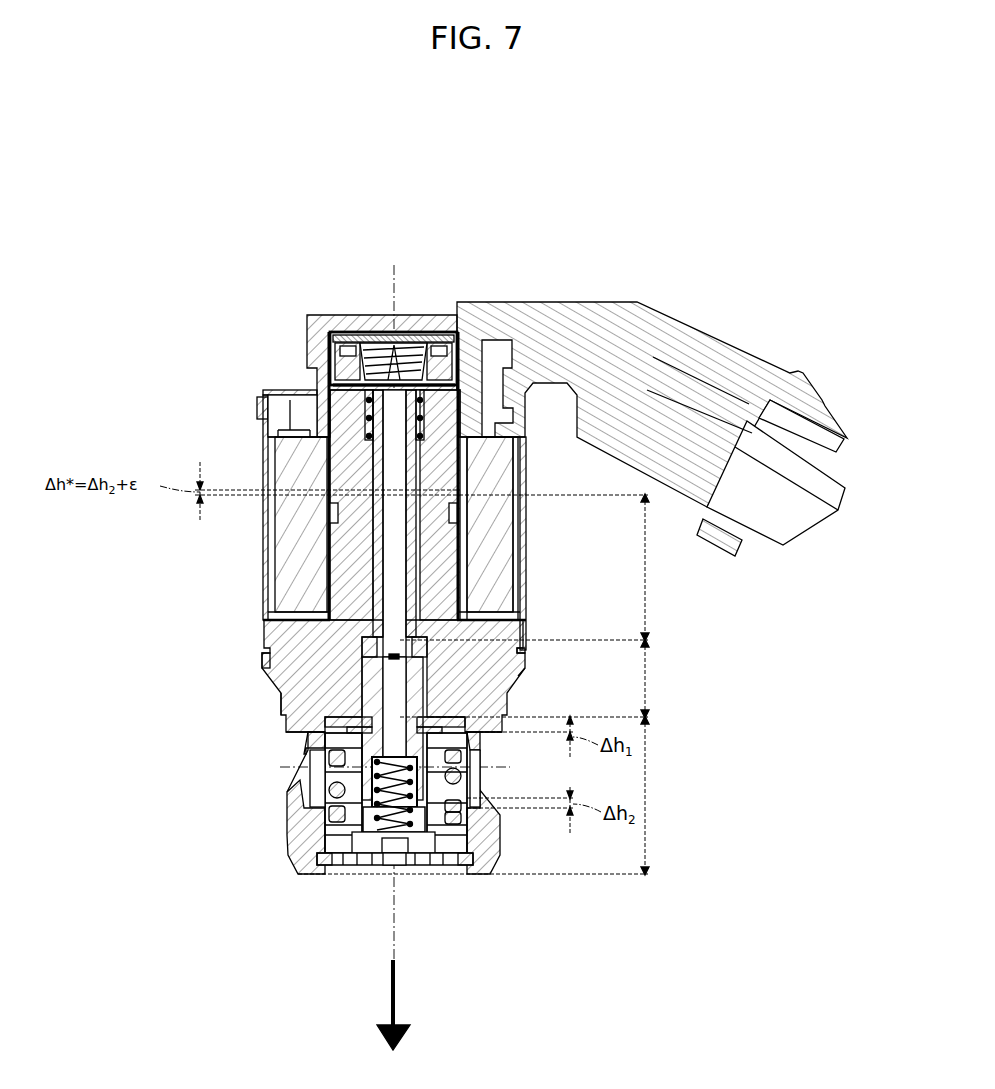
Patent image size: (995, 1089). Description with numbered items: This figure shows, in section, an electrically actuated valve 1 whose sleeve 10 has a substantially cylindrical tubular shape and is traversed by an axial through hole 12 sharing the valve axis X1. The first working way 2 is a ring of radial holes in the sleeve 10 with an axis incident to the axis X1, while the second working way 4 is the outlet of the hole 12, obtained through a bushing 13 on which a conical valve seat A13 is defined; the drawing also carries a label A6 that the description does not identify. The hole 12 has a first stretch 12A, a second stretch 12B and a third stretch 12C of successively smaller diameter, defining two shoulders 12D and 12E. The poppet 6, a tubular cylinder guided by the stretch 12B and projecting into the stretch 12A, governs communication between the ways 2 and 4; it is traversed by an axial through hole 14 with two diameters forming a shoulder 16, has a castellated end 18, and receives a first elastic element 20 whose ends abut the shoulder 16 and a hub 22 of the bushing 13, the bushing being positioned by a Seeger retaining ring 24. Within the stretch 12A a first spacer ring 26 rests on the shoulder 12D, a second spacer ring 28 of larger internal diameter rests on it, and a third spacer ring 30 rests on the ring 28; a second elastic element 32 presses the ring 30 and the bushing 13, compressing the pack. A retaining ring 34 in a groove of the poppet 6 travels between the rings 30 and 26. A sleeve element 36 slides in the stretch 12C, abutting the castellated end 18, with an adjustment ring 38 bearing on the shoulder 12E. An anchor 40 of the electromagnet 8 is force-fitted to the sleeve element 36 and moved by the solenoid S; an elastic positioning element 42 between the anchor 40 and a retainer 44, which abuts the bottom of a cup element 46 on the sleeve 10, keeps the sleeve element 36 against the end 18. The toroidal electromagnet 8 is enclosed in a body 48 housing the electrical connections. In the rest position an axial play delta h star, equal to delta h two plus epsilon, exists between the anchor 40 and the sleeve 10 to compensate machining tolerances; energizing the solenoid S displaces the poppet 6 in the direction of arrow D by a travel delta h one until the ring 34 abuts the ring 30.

The electrically actuated valve 1 is at (672, 248).
The body 48 is at (306, 336).
The cup element 46 is at (345, 342).
The elastic positioning element 42 is at (380, 343).
The retainer 44 is at (440, 343).
The anchor 40 is at (494, 342).
The solenoid S is at (512, 476).
The electromagnet 8 is at (496, 527).
The shoulder 12E is at (362, 605).
The sleeve element 36 is at (495, 586).
The adjustment ring 38 is at (500, 605).
The third spacer ring 30 is at (262, 662).
The shoulder 12D is at (300, 703).
The castellated end 18 is at (524, 652).
The axial through hole 14 is at (526, 676).
The poppet 6 is at (414, 690).
The first spacer ring 26 is at (428, 700).
The second spacer ring 28 is at (330, 722).
The first working way 2 is at (308, 756).
The shoulder 16 is at (282, 767).
The seal ring A6 is at (335, 790).
The valve seat A13 is at (323, 820).
The retaining ring 34 is at (462, 742).
The second elastic element 32 is at (455, 790).
The first elastic element 20 is at (480, 803).
The sleeve 10 is at (500, 828).
The axial through hole 12 is at (446, 880).
The hub 22 is at (410, 855).
The bushing 13 is at (330, 868).
The second working way 4 is at (385, 860).
The retaining ring 24 is at (355, 868).
The axis X1 is at (398, 940).
The arrow D is at (387, 1005).
The first stretch 12A is at (494, 795).
The second stretch 12B is at (547, 678).
The third stretch 12C is at (444, 565).